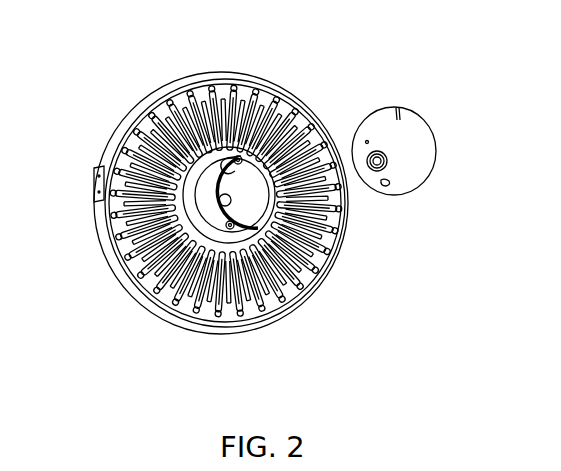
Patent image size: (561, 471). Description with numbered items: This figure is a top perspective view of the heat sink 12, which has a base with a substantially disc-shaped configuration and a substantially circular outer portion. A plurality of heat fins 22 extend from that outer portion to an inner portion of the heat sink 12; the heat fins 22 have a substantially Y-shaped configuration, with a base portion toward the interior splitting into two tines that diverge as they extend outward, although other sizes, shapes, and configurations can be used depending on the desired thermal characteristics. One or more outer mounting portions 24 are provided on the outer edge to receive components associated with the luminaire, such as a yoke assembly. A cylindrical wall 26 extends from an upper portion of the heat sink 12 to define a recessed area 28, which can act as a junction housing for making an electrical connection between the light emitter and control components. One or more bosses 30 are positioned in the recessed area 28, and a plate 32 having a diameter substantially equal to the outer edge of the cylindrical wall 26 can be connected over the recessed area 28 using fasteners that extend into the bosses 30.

The heat sink 12 is at (130, 102).
The heat fins 22 is at (262, 100).
The outer mounting portions 24 is at (107, 171).
The cylindrical wall 26 is at (193, 205).
The recessed area 28 is at (212, 211).
The bosses 30 is at (215, 213).
The plate 32 is at (420, 143).